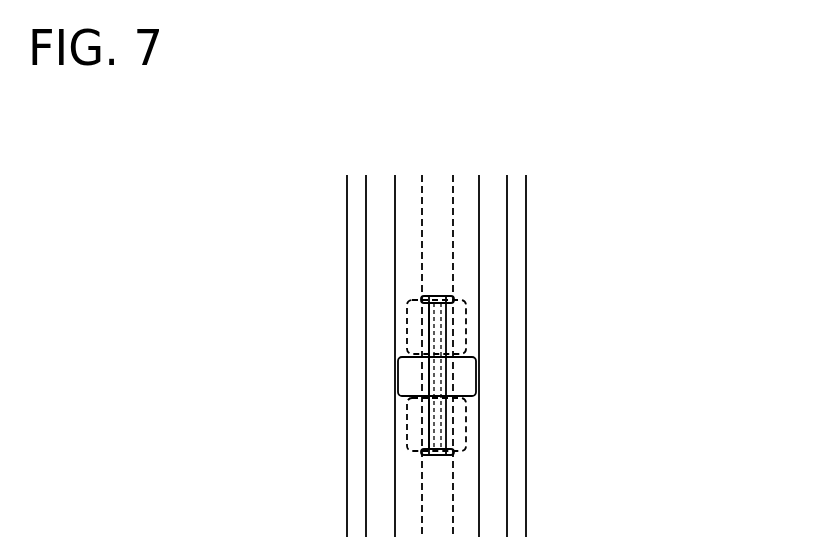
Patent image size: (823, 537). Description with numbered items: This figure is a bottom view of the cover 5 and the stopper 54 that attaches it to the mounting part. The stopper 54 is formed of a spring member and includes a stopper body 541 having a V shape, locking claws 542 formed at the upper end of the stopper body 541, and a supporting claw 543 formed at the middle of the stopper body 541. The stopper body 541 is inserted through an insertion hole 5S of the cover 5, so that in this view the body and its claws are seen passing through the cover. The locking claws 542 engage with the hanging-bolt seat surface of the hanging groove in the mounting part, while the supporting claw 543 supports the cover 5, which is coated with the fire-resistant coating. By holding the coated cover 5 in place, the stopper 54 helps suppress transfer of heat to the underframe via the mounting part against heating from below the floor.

The cover 5 is at (526, 223).
The insertion hole 5S is at (428, 325).
The stopper 54 is at (553, 380).
The stopper body 541 is at (444, 343).
The locking claws 542 is at (465, 317).
The supporting claw 543 is at (468, 377).